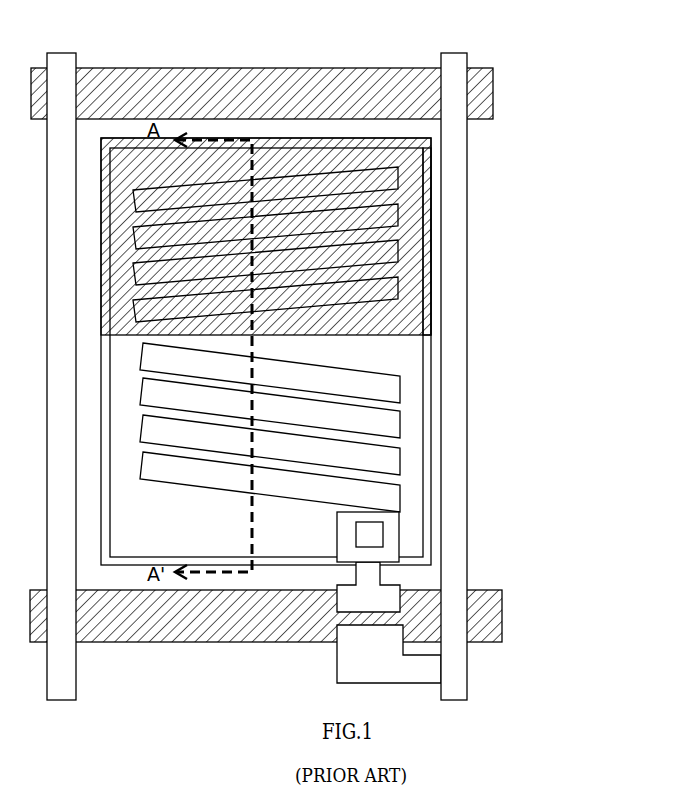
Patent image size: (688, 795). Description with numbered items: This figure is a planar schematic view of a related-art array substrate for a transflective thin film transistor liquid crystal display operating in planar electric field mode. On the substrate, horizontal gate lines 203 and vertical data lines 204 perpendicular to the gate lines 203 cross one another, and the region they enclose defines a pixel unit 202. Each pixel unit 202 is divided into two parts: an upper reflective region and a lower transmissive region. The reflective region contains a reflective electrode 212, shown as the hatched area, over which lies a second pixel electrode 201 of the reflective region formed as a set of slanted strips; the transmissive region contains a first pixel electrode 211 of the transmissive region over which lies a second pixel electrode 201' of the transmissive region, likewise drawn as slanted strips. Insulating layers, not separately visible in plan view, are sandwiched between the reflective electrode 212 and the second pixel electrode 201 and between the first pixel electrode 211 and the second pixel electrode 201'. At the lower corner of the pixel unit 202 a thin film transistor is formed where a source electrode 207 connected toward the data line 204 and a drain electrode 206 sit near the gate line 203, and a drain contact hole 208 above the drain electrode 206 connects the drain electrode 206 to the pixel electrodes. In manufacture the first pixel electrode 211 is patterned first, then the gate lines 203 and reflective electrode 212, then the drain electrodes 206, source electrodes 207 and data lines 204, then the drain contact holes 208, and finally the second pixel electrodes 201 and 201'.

The gate line 203 is at (493, 97).
The pixel unit 202 is at (431, 138).
The reflective electrode 212 is at (425, 222).
The second pixel electrode of the reflective region 201 is at (346, 244).
The data line 204 is at (453, 287).
The first pixel electrode of the transmissive region 211 is at (423, 363).
The second pixel electrode of the transmissive region 201' is at (381, 427).
The drain contact hole 208 is at (370, 533).
The drain electrode 206 is at (355, 608).
The source electrode 207 is at (370, 667).